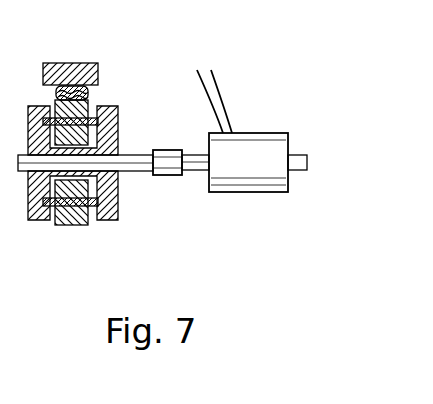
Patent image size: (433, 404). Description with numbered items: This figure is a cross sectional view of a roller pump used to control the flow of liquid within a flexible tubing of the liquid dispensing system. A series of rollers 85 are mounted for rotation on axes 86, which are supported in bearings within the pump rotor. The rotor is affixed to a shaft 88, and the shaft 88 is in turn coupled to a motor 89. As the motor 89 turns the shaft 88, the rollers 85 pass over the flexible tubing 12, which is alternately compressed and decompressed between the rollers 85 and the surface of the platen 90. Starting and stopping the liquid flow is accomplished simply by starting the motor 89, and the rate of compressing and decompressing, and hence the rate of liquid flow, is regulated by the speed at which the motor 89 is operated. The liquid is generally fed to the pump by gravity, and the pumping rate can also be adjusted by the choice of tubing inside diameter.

The platen 90 is at (62, 62).
The flexible tubing 12 is at (88, 91).
The rollers 85 is at (89, 98).
The axes 86 is at (36, 221).
The shaft 88 is at (122, 161).
The motor 89 is at (241, 133).